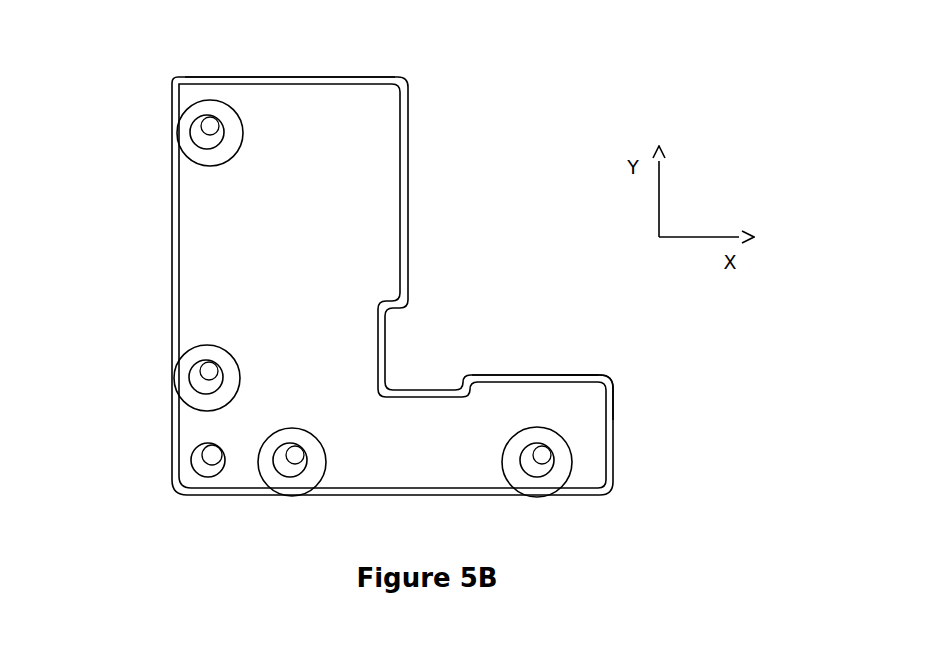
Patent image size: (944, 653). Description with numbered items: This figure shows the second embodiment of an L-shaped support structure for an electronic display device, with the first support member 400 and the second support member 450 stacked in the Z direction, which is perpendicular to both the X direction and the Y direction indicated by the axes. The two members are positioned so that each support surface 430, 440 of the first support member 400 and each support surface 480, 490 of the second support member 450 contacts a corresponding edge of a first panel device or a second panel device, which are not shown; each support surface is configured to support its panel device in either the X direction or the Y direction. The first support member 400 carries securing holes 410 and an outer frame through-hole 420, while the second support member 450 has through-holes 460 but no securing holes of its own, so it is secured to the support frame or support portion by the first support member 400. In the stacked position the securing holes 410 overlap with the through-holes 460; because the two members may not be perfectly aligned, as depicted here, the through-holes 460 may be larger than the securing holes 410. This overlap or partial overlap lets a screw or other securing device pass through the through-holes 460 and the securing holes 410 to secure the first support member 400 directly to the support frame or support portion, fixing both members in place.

The first support member 400 is at (168, 78).
The securing holes 410 is at (185, 135).
The outer frame through-hole 420 is at (194, 474).
The support surface 430 is at (404, 199).
The support surface 440 is at (502, 377).
The second support member 450 is at (224, 72).
The through-holes 460 is at (205, 139).
The support surface 480 is at (412, 143).
The support surface 490 is at (567, 372).